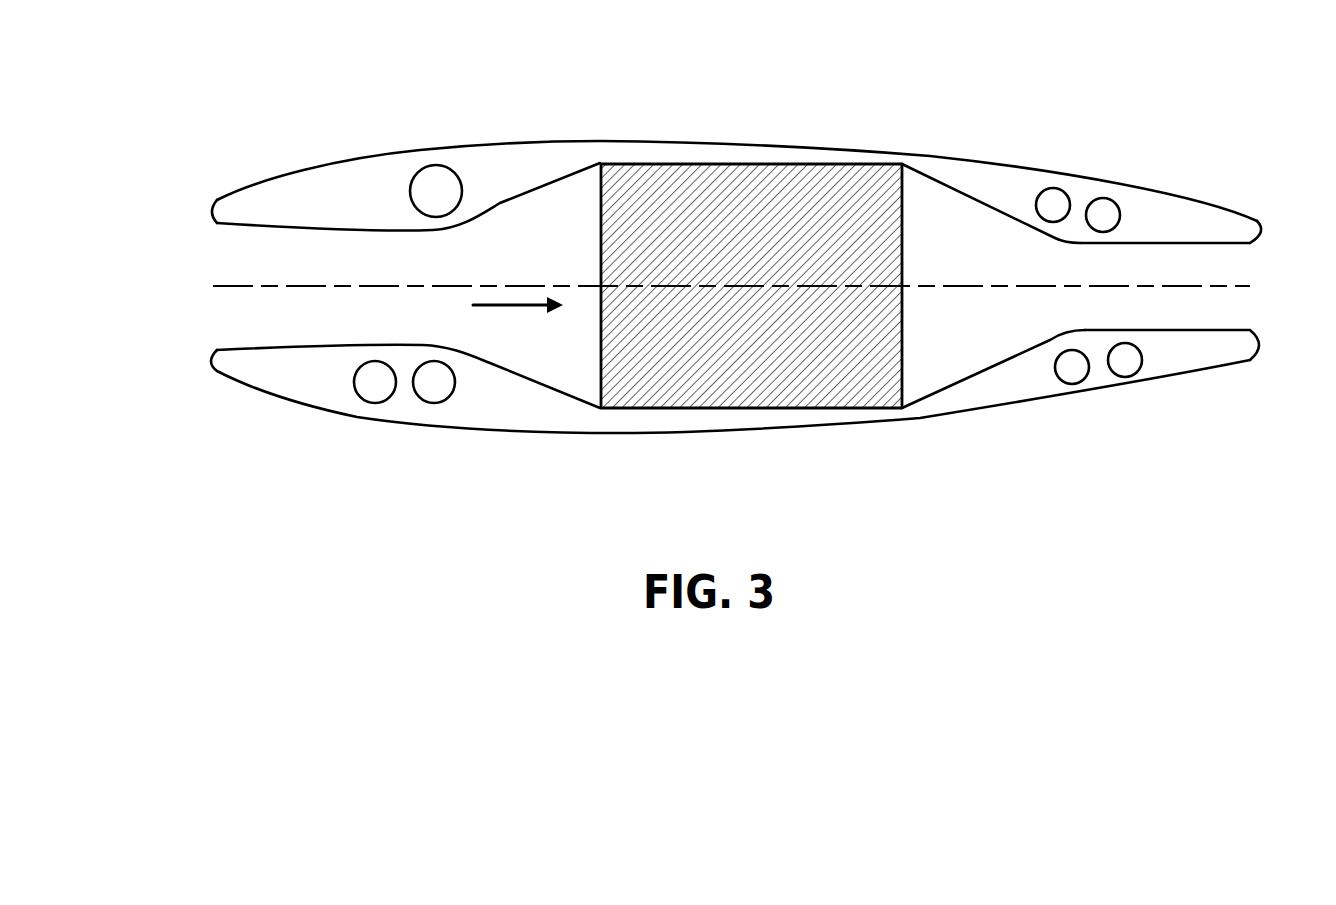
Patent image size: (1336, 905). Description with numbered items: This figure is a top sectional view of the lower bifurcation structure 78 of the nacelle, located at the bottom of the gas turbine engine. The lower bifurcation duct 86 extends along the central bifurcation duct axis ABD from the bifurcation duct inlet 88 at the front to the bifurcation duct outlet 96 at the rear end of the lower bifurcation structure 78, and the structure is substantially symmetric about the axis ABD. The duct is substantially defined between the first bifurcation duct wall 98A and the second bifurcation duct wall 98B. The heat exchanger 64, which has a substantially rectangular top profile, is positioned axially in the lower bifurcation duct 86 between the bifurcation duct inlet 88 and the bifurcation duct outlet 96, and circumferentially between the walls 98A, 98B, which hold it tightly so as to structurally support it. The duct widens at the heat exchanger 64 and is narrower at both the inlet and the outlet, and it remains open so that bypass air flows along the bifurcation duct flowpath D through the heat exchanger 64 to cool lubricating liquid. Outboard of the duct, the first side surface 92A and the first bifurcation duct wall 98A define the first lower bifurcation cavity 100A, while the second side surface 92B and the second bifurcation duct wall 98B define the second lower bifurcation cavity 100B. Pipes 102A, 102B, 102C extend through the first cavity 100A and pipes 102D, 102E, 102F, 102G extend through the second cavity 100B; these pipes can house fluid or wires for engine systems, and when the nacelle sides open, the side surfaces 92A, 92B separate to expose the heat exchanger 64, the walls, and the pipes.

The lower bifurcation structure 78 is at (264, 121).
The heat exchanger 64 is at (804, 143).
The lower bifurcation duct 86 is at (405, 326).
The bifurcation duct inlet 88 is at (212, 213).
The bifurcation duct outlet 96 is at (1262, 233).
The first side surface 92A is at (520, 140).
The second side surface 92B is at (532, 432).
The first bifurcation duct wall 98A is at (955, 193).
The second bifurcation duct wall 98B is at (955, 383).
The first lower bifurcation cavity 100A is at (998, 188).
The second lower bifurcation cavity 100B is at (987, 385).
The pipe 102A is at (423, 167).
The pipe 102B is at (1050, 187).
The pipe 102C is at (1107, 198).
The pipe 102D is at (377, 403).
The pipe 102E is at (433, 403).
The pipe 102F is at (1075, 384).
The pipe 102G is at (1128, 377).
The central bifurcation duct axis ABD is at (1194, 287).
The bifurcation duct flowpath D is at (508, 307).